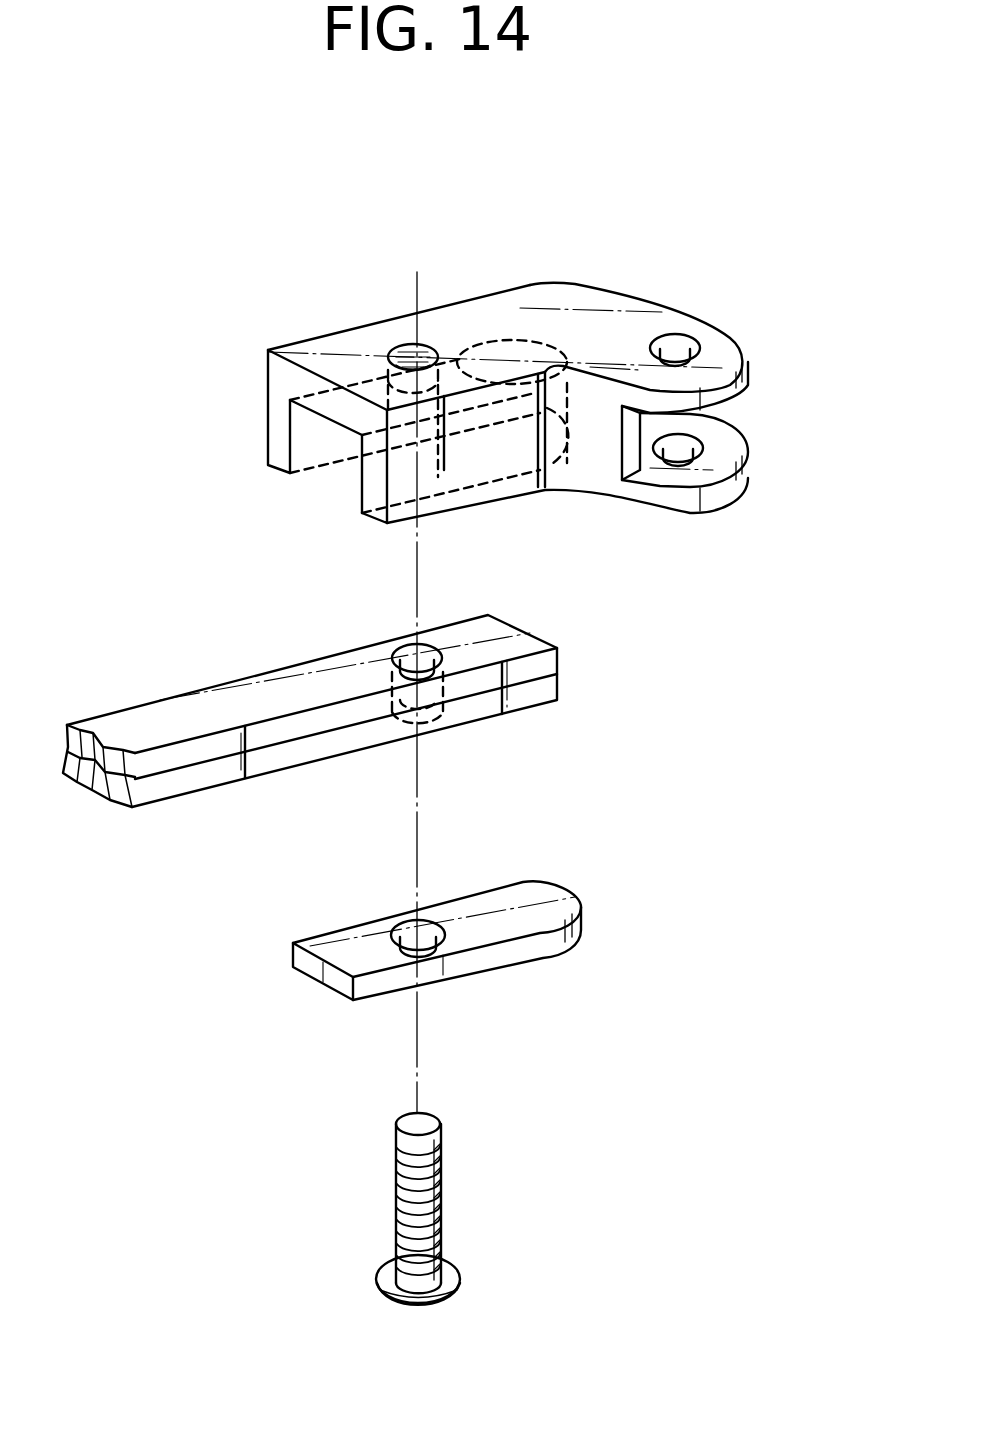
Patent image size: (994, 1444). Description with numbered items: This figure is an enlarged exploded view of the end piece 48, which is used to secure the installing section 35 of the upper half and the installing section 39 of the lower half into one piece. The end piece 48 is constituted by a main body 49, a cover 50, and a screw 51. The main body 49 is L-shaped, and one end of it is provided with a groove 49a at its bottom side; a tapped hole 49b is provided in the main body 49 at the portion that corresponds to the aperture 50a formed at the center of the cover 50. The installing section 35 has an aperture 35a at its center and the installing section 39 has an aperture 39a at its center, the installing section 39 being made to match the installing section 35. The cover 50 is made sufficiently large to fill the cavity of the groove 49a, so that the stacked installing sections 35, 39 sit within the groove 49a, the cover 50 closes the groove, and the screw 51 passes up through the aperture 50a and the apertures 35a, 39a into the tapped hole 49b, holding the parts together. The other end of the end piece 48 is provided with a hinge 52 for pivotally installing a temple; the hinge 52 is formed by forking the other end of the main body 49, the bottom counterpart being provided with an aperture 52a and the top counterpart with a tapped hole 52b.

The end piece 48 is at (663, 243).
The main body 49 is at (320, 346).
The groove 49a is at (330, 467).
The tapped hole 49b is at (400, 342).
The hinge 52 is at (675, 322).
The aperture 52a is at (744, 442).
The tapped hole 52b is at (690, 333).
The installing section 35 is at (237, 688).
The aperture 35a is at (400, 640).
The installing section 39 is at (278, 762).
The aperture 39a is at (425, 730).
The cover 50 is at (537, 890).
The aperture 50a is at (405, 915).
The screw 51 is at (395, 1185).